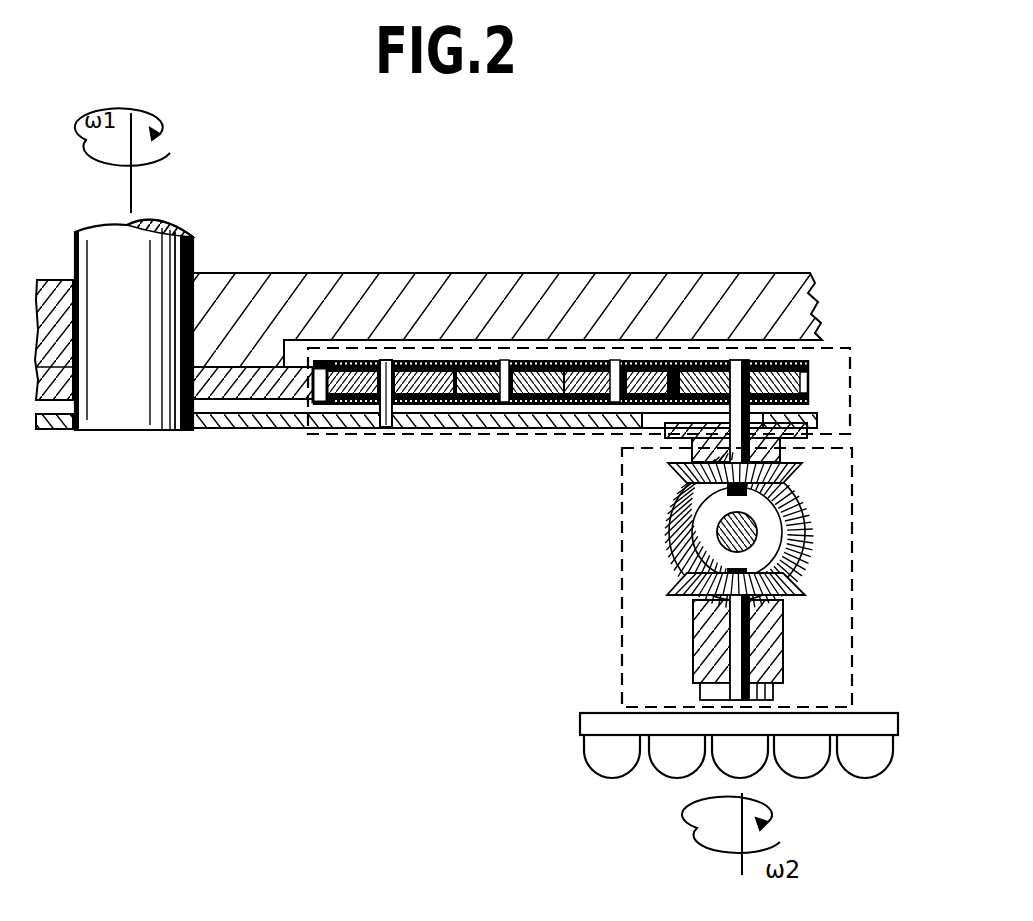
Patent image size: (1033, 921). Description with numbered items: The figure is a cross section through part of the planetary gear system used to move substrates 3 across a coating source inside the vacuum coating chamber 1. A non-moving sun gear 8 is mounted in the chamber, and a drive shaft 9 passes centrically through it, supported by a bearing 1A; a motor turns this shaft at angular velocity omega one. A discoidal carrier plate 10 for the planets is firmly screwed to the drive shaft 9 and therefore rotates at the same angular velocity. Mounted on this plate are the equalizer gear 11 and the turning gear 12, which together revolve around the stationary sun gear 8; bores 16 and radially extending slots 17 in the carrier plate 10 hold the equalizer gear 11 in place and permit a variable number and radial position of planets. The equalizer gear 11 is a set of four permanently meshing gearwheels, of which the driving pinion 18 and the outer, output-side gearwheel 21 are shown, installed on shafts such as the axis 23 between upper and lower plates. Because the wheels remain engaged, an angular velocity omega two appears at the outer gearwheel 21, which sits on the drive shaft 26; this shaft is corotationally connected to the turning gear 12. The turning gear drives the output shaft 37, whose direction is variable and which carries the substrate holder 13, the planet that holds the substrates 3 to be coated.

The vacuum coating chamber 1 is at (487, 284).
The bearing 1A is at (193, 274).
The substrate 3 is at (588, 780).
The sun gear 8 is at (247, 365).
The drive shaft 9 is at (95, 245).
The carrier plate for planets 10 is at (248, 432).
The equalizer gear 11 is at (514, 445).
The turning gear 12 is at (612, 538).
The substrate holder 13 is at (612, 727).
The bore 16 is at (405, 432).
The slot 17 is at (655, 420).
The gearwheel 18 is at (348, 405).
The gearwheel 21 is at (812, 373).
The axis 23 is at (385, 432).
The drive shaft 26 is at (736, 362).
The output shaft 37 is at (748, 637).